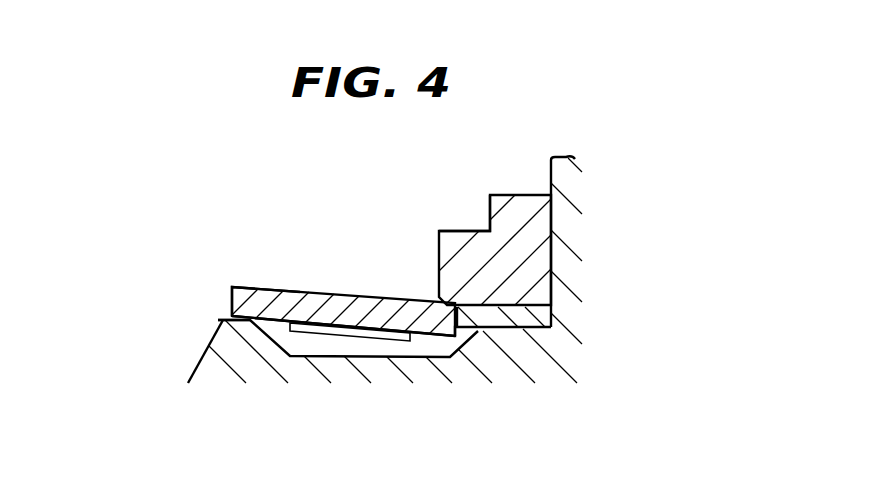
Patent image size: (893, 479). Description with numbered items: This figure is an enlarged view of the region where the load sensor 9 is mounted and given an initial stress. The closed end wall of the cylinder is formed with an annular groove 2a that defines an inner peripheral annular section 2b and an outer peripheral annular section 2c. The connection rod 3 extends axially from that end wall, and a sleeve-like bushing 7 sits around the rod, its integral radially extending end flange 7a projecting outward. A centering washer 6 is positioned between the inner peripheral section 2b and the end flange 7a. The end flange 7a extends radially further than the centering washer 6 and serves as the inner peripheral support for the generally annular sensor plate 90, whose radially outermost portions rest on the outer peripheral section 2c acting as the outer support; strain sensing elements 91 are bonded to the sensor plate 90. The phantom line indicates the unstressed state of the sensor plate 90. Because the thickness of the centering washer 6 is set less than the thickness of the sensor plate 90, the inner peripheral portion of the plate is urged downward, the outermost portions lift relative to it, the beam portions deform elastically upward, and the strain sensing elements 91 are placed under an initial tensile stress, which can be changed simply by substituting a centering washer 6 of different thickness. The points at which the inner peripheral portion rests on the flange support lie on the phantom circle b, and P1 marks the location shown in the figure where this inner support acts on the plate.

The connection rod 3 is at (549, 166).
The sleeve-like bushing 7 is at (510, 191).
The end flange 7a is at (453, 243).
The load sensor 9 is at (229, 284).
The annular groove 2a is at (282, 331).
The sensor plate 90 is at (438, 287).
The strain sensing elements 91 is at (352, 339).
The centering washer 6 is at (498, 302).
The outer peripheral annular section 2c is at (230, 314).
The inner peripheral annular section 2b is at (535, 327).
The pressing point P1 is at (251, 321).
The phantom circle b is at (445, 310).